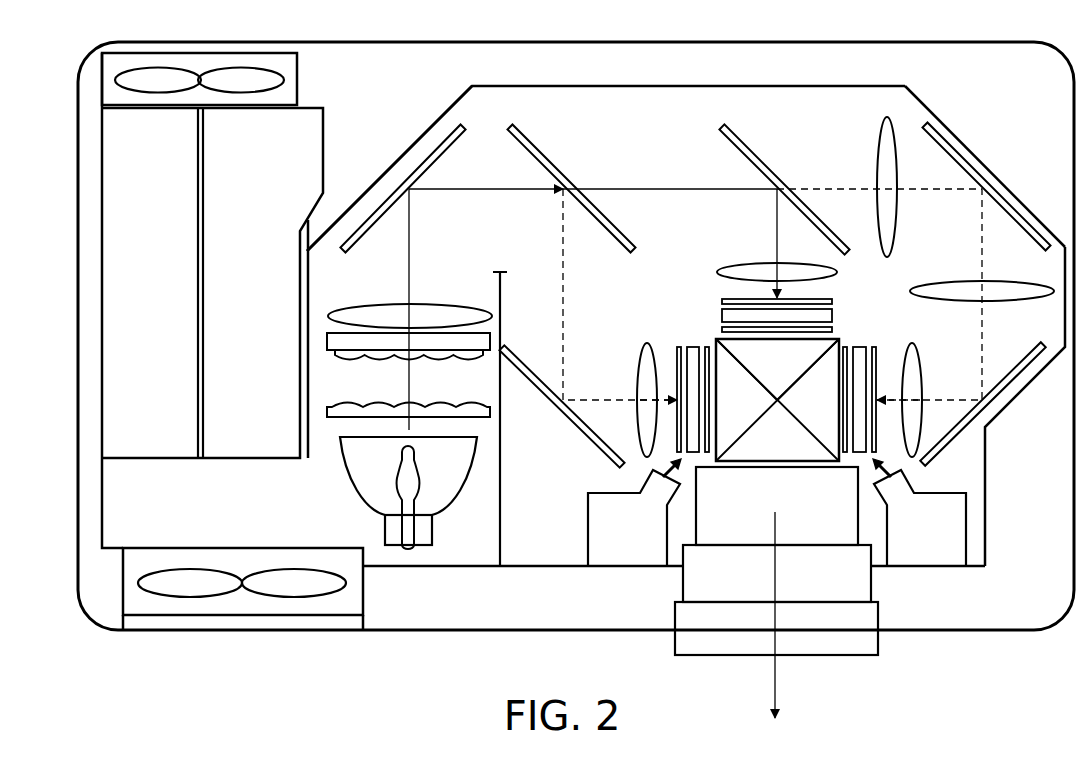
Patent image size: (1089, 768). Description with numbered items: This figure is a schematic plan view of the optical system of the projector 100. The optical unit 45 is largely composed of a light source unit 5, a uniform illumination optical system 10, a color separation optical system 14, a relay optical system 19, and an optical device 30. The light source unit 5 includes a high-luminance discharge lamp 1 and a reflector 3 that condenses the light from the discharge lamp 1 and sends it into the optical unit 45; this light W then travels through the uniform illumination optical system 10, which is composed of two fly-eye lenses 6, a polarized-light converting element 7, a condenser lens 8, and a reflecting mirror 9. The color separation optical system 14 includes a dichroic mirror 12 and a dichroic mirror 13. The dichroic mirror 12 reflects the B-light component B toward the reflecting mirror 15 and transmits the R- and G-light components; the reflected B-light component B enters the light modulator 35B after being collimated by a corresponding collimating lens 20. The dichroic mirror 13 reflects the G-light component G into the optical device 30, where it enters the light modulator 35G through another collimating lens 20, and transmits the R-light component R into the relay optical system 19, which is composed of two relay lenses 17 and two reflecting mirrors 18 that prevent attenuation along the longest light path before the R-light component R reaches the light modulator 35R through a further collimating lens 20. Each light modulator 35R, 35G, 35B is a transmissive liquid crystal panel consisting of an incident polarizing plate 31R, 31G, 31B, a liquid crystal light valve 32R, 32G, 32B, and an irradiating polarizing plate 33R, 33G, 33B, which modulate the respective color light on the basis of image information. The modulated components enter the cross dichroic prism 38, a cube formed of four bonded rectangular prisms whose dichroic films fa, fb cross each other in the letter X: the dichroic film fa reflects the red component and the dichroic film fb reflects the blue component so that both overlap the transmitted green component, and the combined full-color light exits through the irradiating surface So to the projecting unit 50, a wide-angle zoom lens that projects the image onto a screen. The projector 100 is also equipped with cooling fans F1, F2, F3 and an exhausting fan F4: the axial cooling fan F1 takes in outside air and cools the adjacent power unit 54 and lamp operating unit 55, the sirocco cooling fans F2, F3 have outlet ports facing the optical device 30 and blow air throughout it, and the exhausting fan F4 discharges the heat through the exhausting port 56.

The projector 100 is at (578, 42).
The lamp operating unit 55 is at (108, 282).
The optical unit 45 is at (420, 119).
The relay optical system 19 is at (996, 150).
The cooling fan F1 is at (298, 78).
The cooling fan F2 is at (925, 557).
The cooling fan F3 is at (626, 557).
The exhausting fan F4 is at (360, 590).
The power unit 54 is at (322, 148).
The exhausting port 56 is at (242, 624).
The light source unit 5 is at (381, 493).
The reflector 3 is at (366, 478).
The discharge lamp 1 is at (397, 485).
The fly-eye lens 6 is at (468, 413).
The polarized-light converting element 7 is at (468, 356).
The condenser lens 8 is at (450, 310).
The reflecting mirror 9 is at (390, 203).
The uniform illumination optical system 10 is at (506, 245).
The white light W is at (486, 173).
The color separation optical system 14 is at (679, 176).
The dichroic mirror 12 is at (527, 141).
The dichroic mirror 13 is at (747, 157).
The optical device 30 is at (667, 228).
The relay lens 17 is at (913, 290).
The reflecting mirror 18 is at (1012, 214).
The collimating lens 20 is at (739, 266).
The G-light component G is at (766, 243).
The B-light component B is at (647, 388).
The R-light component R is at (911, 388).
The light modulator 35G is at (711, 282).
The incident polarizing plate 31G is at (723, 299).
The liquid crystal light valve 32G is at (723, 312).
The irradiating polarizing plate 33G is at (743, 305).
The light modulator 35B is at (638, 363).
The incident polarizing plate 31B is at (678, 347).
The liquid crystal light valve 32B is at (692, 347).
The irradiating polarizing plate 33B is at (687, 379).
The light modulator 35R is at (911, 361).
The incident polarizing plate 31R is at (925, 379).
The liquid crystal light valve 32R is at (860, 347).
The irradiating polarizing plate 33R is at (846, 347).
The cross dichroic prism 38 is at (748, 455).
The irradiating surface So is at (800, 458).
The dichroic film fa is at (753, 426).
The dichroic film fb is at (801, 426).
The reflecting mirror 15 is at (567, 412).
The projecting unit 50 is at (820, 645).